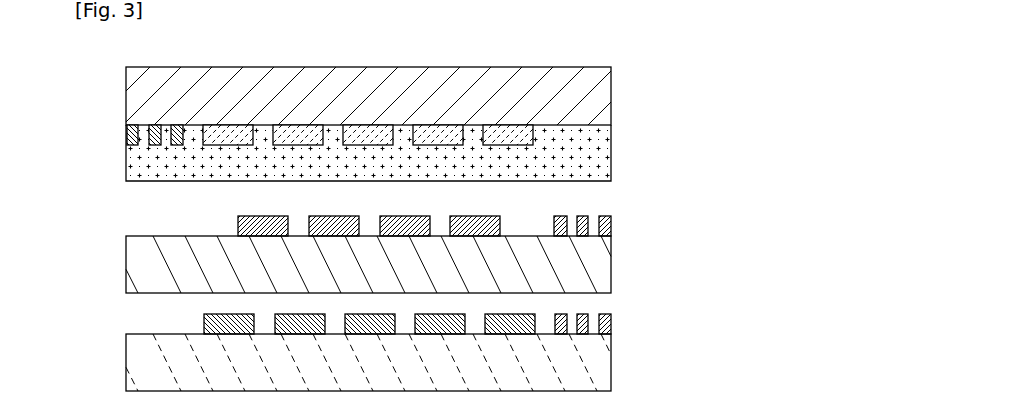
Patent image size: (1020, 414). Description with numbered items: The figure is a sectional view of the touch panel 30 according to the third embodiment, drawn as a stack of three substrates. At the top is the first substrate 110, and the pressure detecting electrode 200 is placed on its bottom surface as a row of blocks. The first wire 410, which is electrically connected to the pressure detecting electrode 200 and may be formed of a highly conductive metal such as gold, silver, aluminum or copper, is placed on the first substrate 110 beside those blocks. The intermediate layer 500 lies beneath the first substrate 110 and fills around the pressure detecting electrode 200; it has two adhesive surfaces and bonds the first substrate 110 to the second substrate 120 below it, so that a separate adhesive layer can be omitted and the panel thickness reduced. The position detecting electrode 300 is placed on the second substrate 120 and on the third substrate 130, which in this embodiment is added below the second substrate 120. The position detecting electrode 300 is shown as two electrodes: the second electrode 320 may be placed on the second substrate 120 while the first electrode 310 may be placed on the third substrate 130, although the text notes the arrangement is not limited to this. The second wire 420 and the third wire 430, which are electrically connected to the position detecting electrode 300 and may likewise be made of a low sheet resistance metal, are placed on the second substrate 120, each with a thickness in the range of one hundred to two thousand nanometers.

The touch panel 30 is at (149, 46).
The first substrate 110 is at (608, 91).
The pressure detecting electrode 200 is at (533, 137).
The intermediate layer 500 is at (608, 158).
The first wire 410 is at (127, 139).
The position detecting electrode 300 is at (175, 223).
The first electrode 310 is at (238, 228).
The second wire 420 is at (613, 225).
The second substrate 120 is at (608, 259).
The second electrode 320 is at (204, 327).
The third wire 430 is at (612, 322).
The third substrate 130 is at (608, 360).